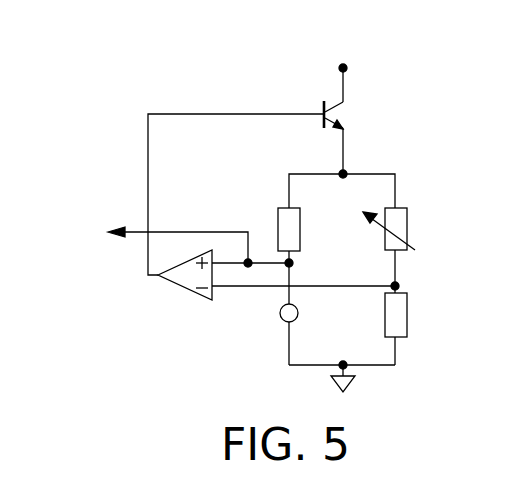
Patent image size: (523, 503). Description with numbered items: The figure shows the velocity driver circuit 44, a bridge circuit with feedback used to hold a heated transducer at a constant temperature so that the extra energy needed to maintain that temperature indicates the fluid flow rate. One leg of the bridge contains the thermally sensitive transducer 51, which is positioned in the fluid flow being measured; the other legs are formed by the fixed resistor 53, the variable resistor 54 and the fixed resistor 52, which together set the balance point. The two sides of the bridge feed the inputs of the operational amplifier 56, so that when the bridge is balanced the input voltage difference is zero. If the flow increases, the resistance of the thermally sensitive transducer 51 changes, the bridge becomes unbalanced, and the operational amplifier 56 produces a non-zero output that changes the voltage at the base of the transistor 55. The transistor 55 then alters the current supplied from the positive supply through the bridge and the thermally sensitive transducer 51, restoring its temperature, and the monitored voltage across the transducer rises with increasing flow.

The velocity driver circuit 44 is at (57, 113).
The thermally sensitive transducer 51 is at (283, 320).
The resistor R4 52 is at (408, 300).
The resistor R1 53 is at (278, 218).
The variable resistor R2 54 is at (408, 229).
The transistor 55 is at (323, 106).
The operational amplifier 56 is at (178, 290).